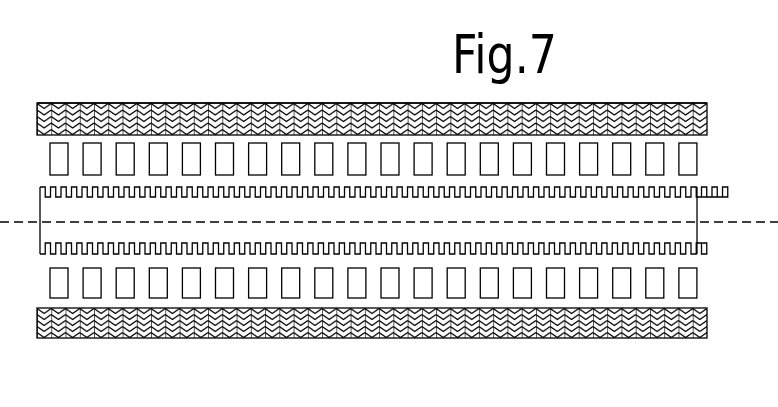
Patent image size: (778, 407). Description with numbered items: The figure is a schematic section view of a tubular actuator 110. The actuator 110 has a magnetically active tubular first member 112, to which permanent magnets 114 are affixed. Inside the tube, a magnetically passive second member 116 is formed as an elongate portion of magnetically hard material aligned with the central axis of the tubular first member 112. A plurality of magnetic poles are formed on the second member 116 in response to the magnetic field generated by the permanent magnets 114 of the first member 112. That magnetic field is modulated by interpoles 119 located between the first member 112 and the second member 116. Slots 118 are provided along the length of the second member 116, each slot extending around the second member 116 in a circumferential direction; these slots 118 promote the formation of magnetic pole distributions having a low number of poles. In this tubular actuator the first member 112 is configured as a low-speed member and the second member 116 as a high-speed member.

The actuator 110 is at (123, 98).
The first member 112 is at (270, 98).
The permanent magnets 114 is at (392, 105).
The second member 116 is at (658, 235).
The slots 118 is at (384, 156).
The interpoles 119 is at (368, 318).